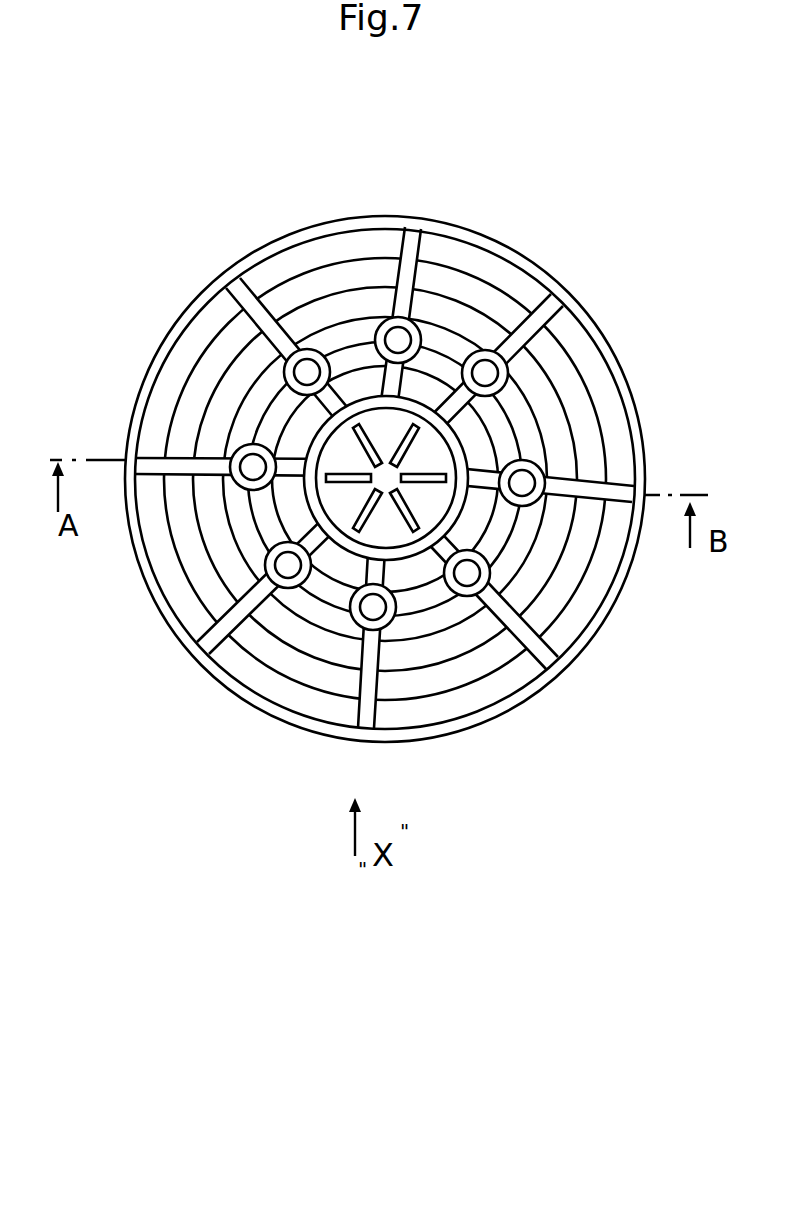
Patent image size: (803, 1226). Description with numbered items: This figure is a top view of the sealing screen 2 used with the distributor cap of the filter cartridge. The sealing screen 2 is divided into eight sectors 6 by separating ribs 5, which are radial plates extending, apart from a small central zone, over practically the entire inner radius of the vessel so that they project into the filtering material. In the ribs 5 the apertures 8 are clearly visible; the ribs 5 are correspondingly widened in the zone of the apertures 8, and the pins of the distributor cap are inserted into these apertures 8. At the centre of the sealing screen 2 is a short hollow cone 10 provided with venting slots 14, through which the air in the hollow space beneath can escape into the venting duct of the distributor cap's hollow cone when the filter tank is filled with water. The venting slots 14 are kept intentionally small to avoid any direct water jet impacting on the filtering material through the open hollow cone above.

The sealing screen 2 is at (194, 268).
The separating ribs 5 is at (260, 310).
The sectors 6 is at (190, 569).
The apertures 8 is at (397, 342).
The central hub 10 is at (430, 507).
The venting slots 14 is at (403, 447).